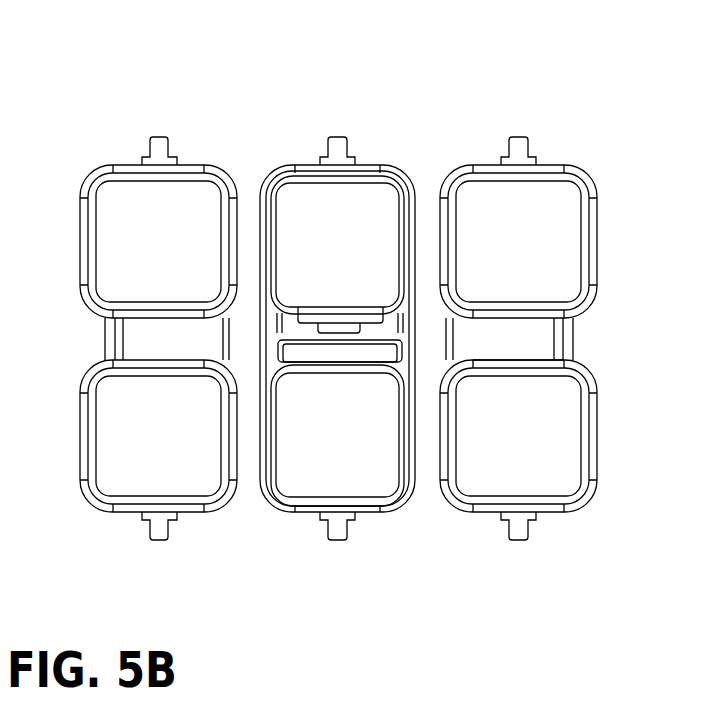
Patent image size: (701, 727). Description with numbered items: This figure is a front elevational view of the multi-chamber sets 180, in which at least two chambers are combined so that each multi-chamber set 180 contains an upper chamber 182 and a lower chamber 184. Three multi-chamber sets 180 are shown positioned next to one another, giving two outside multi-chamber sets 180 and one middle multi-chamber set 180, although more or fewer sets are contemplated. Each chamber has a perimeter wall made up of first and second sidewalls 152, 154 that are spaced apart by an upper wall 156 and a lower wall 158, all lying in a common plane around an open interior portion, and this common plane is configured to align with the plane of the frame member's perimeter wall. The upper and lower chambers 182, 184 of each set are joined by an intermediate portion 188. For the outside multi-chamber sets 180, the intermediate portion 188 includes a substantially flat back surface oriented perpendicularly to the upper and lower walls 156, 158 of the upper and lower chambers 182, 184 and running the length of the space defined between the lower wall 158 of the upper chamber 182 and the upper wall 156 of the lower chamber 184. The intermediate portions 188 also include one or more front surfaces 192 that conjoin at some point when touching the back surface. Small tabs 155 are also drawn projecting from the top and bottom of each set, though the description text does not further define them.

The first sidewall 152 is at (587, 228).
The second sidewall 154 is at (450, 237).
The tab 155 is at (540, 172).
The upper wall 156 is at (520, 367).
The lower wall 158 is at (518, 308).
The multi-chamber set 180 is at (92, 168).
The upper chamber 182 is at (227, 175).
The lower chamber 184 is at (78, 482).
The intermediate portion 188 is at (583, 342).
The front surface 192 is at (527, 333).